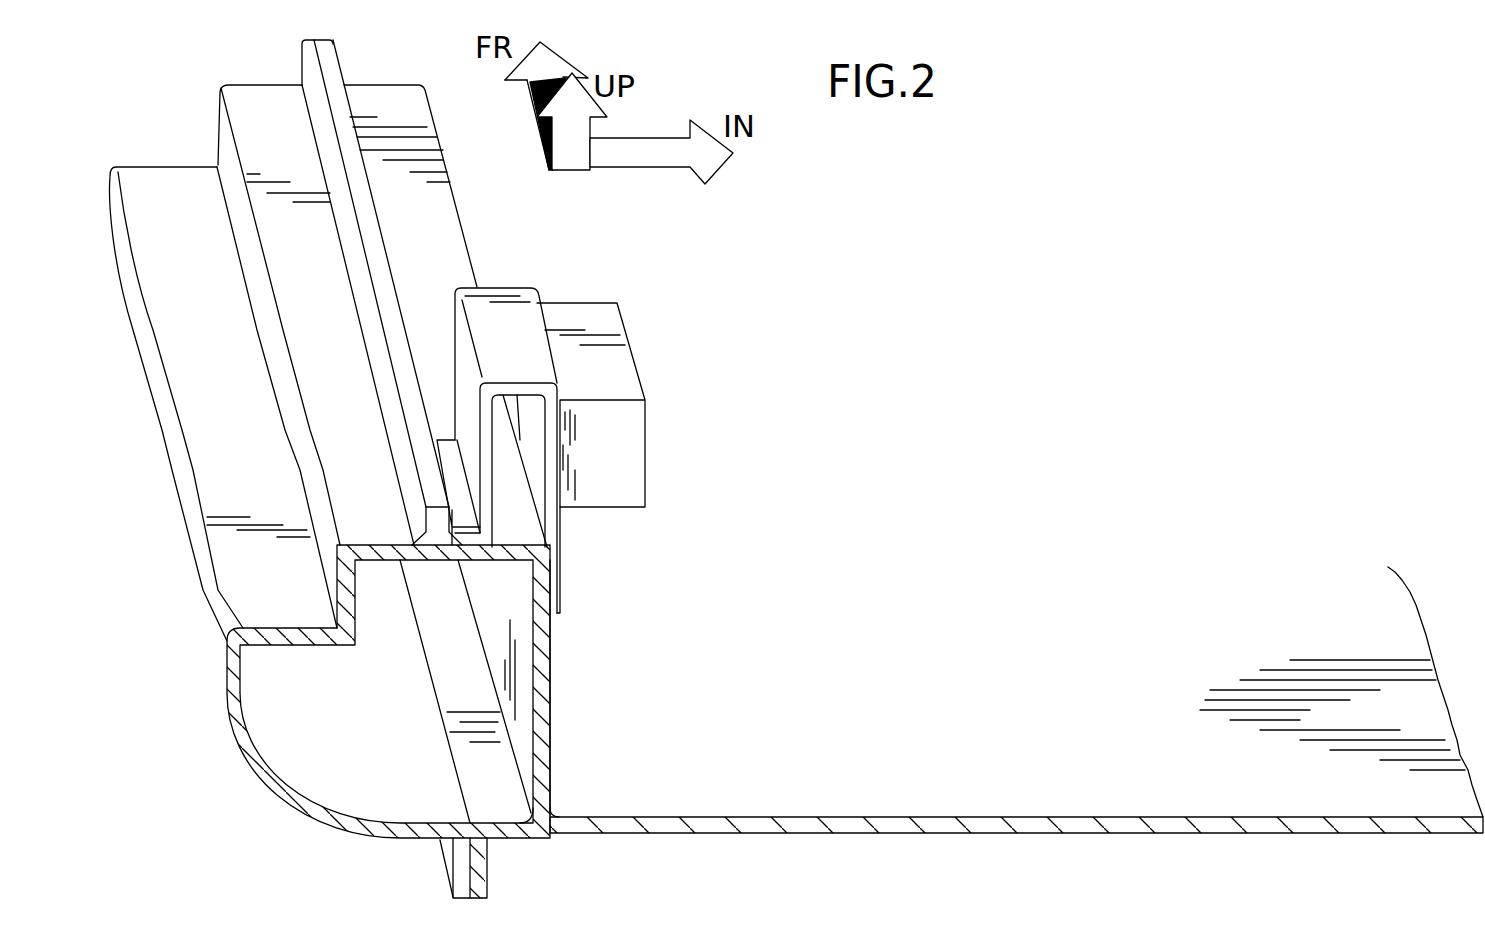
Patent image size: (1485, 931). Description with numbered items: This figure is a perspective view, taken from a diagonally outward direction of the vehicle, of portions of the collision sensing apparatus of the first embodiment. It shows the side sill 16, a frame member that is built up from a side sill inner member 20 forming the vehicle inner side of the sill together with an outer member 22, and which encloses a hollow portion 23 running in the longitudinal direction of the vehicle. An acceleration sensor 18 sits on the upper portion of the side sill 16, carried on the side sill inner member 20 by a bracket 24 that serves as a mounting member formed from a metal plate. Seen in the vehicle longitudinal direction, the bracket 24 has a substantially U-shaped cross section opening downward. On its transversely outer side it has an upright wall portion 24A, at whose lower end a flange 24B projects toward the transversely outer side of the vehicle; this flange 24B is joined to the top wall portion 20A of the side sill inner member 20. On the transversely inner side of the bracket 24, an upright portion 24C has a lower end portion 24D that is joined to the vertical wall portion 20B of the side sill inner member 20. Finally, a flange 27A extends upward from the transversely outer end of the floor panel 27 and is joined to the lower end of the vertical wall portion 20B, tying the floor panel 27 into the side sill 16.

The side sill 16 is at (300, 835).
The acceleration sensor 18 is at (618, 372).
The side sill inner member 20 is at (521, 848).
The top wall portion 20A is at (510, 532).
The vertical wall portion 20B is at (560, 670).
The door glass 22 is at (410, 848).
The hollow portion 23 is at (392, 761).
The bracket 24 is at (530, 443).
The upright wall portion 24A is at (468, 352).
The flange 24B is at (470, 517).
The upright portion 24C is at (553, 440).
The lower end portion 24D is at (558, 583).
The floor panel 27 is at (845, 796).
The flange 27A is at (562, 795).